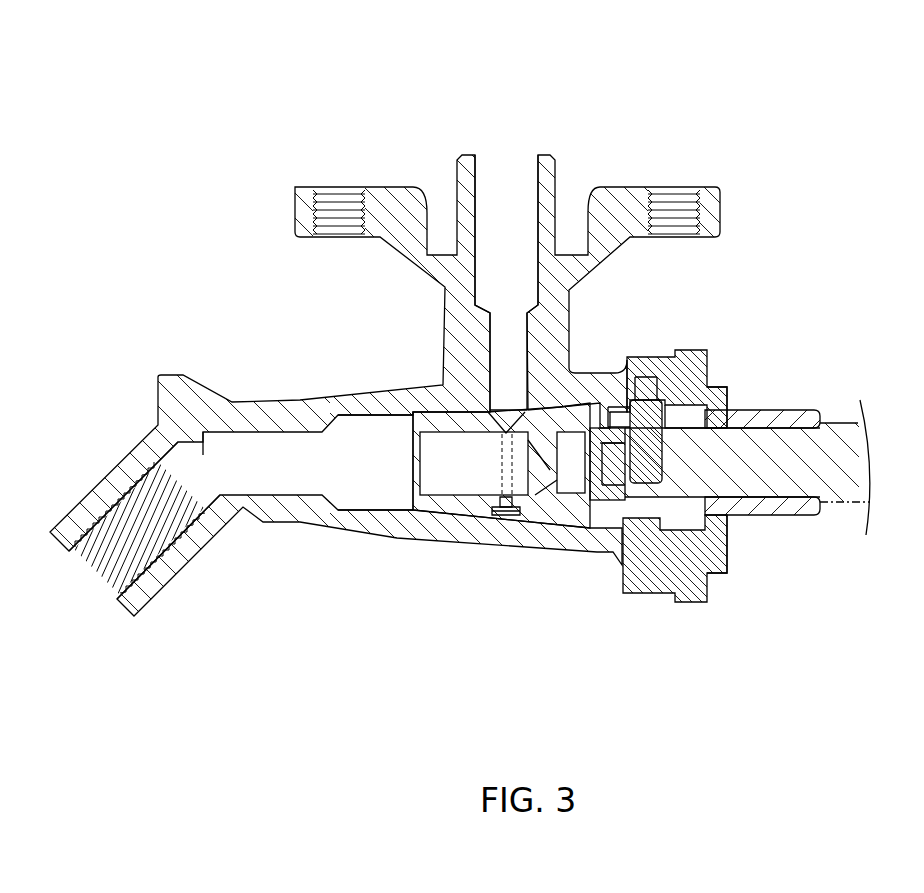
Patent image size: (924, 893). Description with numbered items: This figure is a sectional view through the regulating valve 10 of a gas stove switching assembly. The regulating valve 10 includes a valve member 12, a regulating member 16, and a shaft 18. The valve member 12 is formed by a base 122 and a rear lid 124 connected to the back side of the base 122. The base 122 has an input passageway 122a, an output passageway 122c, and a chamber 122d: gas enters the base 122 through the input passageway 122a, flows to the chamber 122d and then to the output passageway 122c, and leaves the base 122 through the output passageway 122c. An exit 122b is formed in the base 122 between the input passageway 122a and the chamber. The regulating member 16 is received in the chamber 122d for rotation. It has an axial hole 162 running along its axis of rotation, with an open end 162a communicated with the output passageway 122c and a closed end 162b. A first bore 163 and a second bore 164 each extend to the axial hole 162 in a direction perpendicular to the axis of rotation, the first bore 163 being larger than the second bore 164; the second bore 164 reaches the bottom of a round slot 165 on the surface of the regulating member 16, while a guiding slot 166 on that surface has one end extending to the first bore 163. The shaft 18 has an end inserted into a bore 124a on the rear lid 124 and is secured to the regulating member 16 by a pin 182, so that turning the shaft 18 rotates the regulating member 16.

The regulating valve 10 is at (811, 165).
The valve member 12 is at (813, 262).
The base 122 is at (563, 305).
The input passageway 122a is at (513, 180).
The exit 122b is at (500, 420).
The output passageway 122c is at (183, 512).
The chamber 122d is at (357, 510).
The rear lid 124 is at (693, 357).
The bore 124a is at (727, 410).
The regulating member 16 is at (566, 522).
The axial hole 162 is at (430, 480).
The open end 162a is at (413, 457).
The closed end 162b is at (547, 497).
The first bore 163 is at (487, 411).
The second bore 164 is at (498, 495).
The round slot 165 is at (493, 510).
The guiding slot 166 is at (518, 512).
The shaft 18 is at (835, 458).
The pin 182 is at (648, 412).